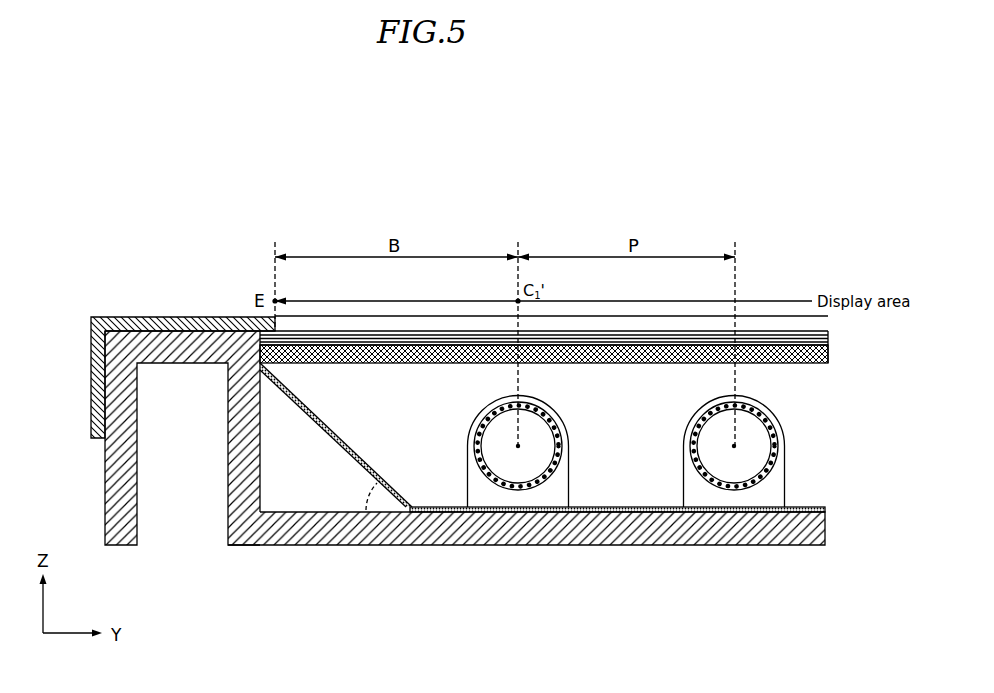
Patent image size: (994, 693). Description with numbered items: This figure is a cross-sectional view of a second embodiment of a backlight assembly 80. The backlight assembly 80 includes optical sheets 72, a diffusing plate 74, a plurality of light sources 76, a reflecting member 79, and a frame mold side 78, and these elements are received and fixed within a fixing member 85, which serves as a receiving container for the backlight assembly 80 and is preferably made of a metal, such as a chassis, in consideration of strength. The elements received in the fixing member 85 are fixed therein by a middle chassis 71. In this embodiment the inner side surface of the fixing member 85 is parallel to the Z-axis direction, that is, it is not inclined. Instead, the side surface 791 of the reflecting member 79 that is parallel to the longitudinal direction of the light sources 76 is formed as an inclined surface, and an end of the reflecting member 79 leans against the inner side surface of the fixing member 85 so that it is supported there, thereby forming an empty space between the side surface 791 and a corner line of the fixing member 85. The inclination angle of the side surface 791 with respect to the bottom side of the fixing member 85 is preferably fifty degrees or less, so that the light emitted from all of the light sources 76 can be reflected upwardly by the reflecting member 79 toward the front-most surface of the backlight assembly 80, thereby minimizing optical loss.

The backlight assembly 80 is at (533, 211).
The middle chassis 71 is at (91, 365).
The fixing member 85 is at (105, 494).
The optical sheets 72 is at (564, 344).
The diffusing plate 74 is at (828, 356).
The light sources 76 is at (767, 460).
The frame mold side 78 is at (805, 423).
The reflecting member 79 is at (826, 512).
The side surface 791 is at (365, 460).